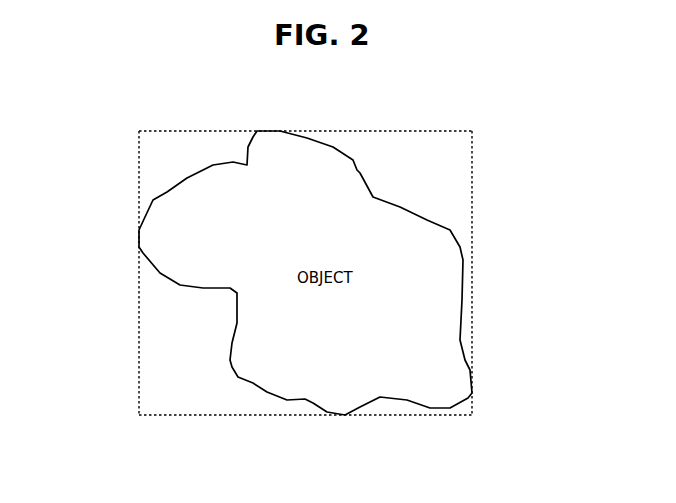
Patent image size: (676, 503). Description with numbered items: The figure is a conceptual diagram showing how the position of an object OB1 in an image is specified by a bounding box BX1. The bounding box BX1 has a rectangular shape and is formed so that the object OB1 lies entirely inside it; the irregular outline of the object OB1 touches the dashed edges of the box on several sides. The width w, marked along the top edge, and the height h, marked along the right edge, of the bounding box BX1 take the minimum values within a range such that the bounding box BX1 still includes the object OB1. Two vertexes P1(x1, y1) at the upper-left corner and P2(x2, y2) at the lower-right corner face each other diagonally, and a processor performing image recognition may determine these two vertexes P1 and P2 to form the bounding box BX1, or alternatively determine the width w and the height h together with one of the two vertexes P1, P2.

The object OB1 is at (357, 170).
The bounding box BX1 is at (305, 254).
The vertex (x1, y1) P1 is at (98, 269).
The vertex (x2, y2) P2 is at (346, 418).
The width w is at (305, 117).
The height h is at (484, 273).